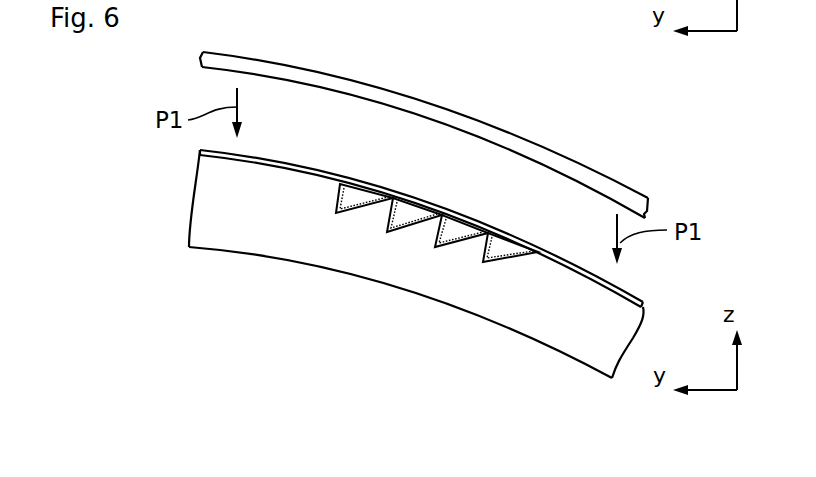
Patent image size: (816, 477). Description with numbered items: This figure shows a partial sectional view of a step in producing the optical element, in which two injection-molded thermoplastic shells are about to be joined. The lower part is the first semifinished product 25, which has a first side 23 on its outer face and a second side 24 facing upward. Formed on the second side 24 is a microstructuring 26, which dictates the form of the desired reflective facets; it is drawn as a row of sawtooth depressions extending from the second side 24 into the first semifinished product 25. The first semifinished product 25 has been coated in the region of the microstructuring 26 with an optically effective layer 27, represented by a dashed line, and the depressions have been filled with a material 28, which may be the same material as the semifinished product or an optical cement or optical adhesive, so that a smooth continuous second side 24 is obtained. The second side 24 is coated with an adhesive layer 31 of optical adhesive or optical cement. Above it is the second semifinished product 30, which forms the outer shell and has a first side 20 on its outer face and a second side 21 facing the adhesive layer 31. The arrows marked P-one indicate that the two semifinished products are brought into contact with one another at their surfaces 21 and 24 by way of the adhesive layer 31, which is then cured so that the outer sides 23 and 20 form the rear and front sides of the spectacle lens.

The first side of second semifinished product 20 is at (612, 177).
The second side of second semifinished product 21 is at (283, 80).
The first side of first semifinished product 23 is at (224, 255).
The second side of first semifinished product 24 is at (573, 262).
The first semifinished product 25 is at (197, 187).
The microstructuring 26 is at (449, 259).
The optically effective layer 27 is at (515, 262).
The filling material 28 is at (363, 200).
The second semifinished product 30 is at (200, 58).
The adhesive layer 31 is at (200, 152).